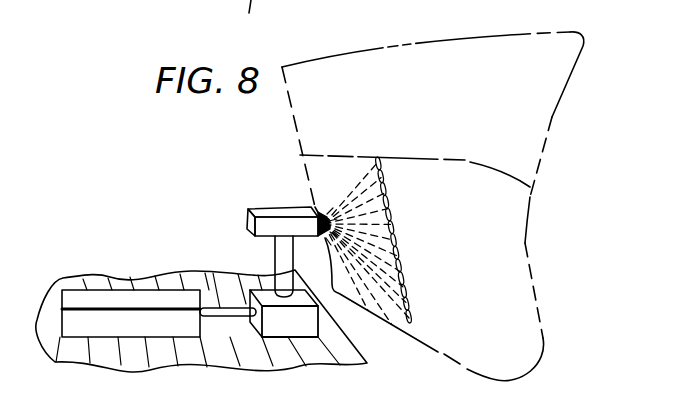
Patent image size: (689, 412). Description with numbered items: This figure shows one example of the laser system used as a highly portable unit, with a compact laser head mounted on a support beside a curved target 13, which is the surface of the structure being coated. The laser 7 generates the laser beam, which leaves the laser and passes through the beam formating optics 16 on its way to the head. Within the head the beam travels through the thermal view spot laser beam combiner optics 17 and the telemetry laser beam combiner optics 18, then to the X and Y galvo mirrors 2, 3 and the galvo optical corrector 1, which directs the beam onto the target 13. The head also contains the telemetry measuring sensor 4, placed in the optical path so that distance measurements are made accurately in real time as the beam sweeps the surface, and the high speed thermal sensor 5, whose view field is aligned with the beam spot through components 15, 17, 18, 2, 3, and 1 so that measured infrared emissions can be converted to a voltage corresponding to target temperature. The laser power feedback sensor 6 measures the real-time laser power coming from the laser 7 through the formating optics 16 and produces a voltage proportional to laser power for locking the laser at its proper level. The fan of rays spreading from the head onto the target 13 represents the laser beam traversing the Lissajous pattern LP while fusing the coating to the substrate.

The scanning optical corrector 1 is at (201, 209).
The X galvo mirror 2 is at (201, 209).
The Y galvo mirror 3 is at (201, 209).
The telemetry measuring sensor 4 is at (201, 209).
The high speed thermal sensor 5 is at (201, 209).
The laser power feedback sensor 6 is at (201, 209).
The laser head component 15 is at (201, 209).
The thermal view spot laser beam combiner optics 17 is at (201, 209).
The telemetry laser beam combiner optics 18 is at (247, 224).
The laser 7 is at (70, 283).
The beam formating optics 16 is at (275, 253).
The target 13 is at (459, 215).
The Lissajous pattern LP is at (410, 269).